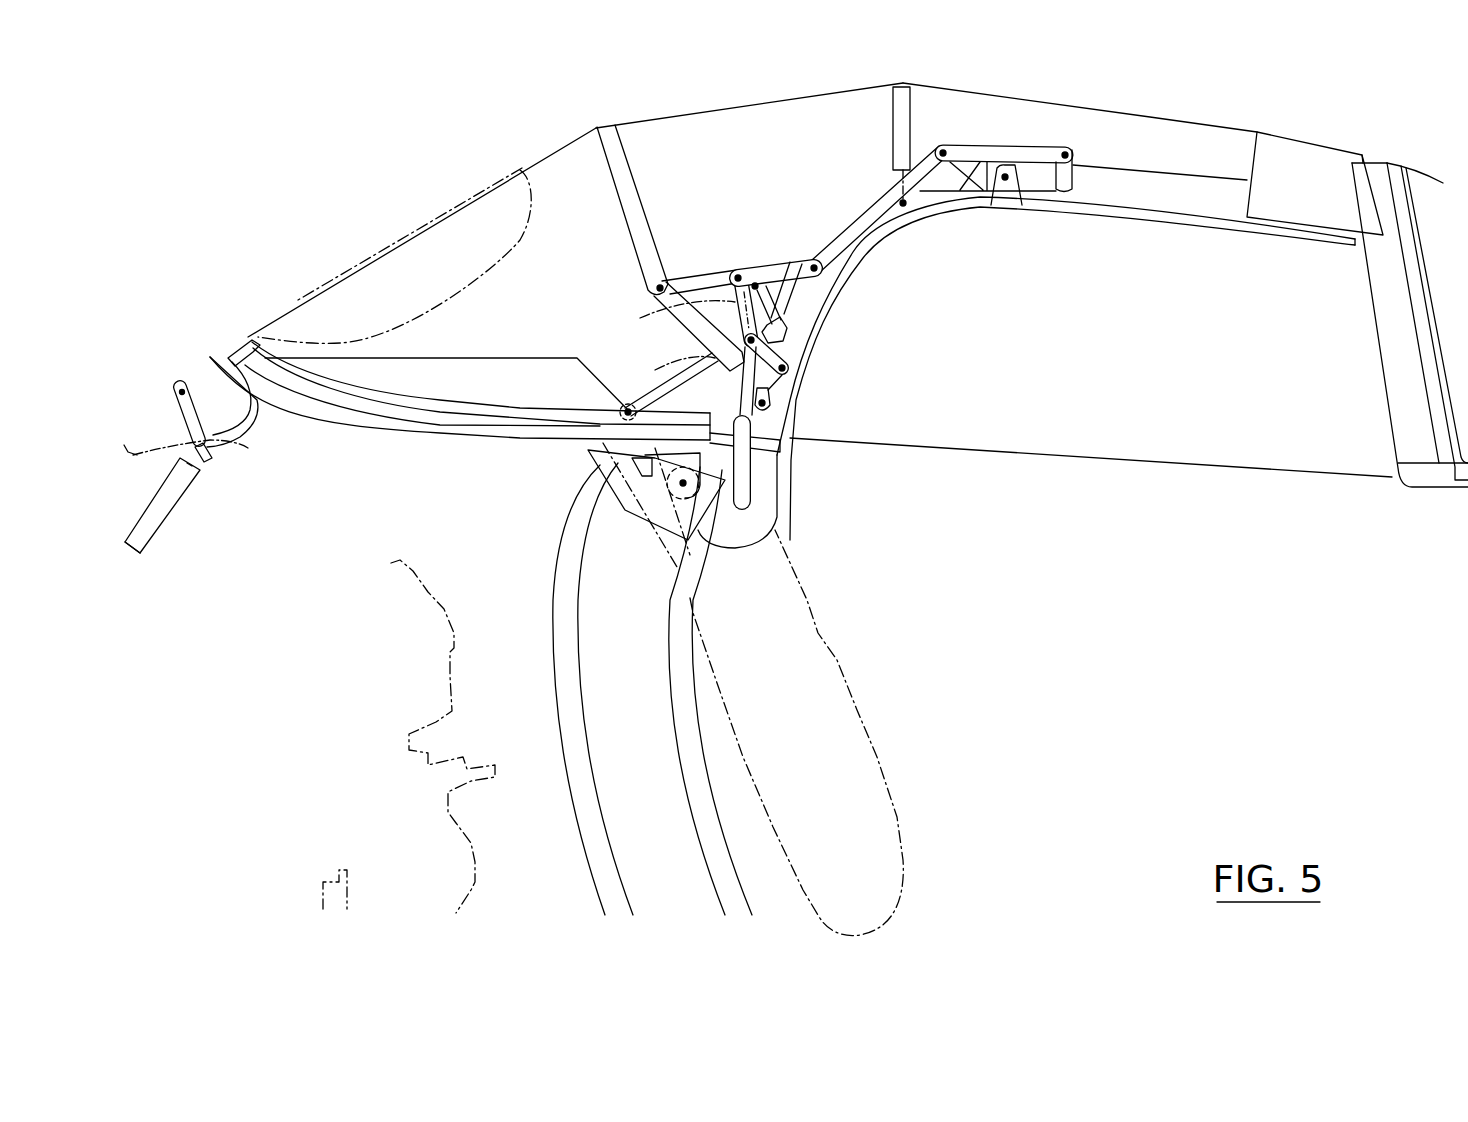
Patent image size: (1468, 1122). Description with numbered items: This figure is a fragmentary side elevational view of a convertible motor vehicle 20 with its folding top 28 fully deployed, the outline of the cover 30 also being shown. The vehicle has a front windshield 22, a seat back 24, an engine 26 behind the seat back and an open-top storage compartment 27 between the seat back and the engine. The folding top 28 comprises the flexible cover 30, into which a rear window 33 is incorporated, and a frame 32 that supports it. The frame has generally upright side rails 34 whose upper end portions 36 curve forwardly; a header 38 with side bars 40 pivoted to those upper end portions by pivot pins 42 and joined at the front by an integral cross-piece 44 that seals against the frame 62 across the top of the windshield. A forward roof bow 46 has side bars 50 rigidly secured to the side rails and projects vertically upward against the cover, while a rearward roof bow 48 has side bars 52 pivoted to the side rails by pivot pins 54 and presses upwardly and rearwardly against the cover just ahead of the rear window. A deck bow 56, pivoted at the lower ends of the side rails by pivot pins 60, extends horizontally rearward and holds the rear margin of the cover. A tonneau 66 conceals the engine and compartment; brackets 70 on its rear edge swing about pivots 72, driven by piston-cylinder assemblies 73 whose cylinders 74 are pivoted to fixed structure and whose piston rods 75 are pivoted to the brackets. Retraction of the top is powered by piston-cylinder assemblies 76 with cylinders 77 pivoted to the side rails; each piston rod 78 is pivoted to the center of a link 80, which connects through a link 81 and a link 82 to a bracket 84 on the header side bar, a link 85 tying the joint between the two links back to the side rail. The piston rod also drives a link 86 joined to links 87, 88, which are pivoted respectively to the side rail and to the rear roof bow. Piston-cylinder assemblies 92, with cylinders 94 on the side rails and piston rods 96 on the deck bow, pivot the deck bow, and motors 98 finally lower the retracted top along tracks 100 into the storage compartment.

The convertible motor vehicle 20 is at (1350, 132).
The front windshield 22 is at (1436, 185).
The seat back 24 is at (835, 638).
The engine 26 is at (432, 592).
The storage compartment 27 is at (528, 684).
The folding top 28 is at (663, 116).
The cover 30 is at (720, 110).
The frame 32 is at (580, 166).
The rear window 33 is at (360, 265).
The side rails 34 is at (816, 330).
The upper end portions 36 is at (973, 212).
The header 38 is at (1289, 128).
The side bars 40 is at (1167, 178).
The pivot pins 42 is at (1007, 176).
The cross-piece 44 is at (1315, 152).
The forward roof bow 46 is at (905, 107).
The rearward roof bow 48 is at (620, 170).
The side bars 50 is at (893, 118).
The side bars 52 is at (624, 204).
The pivot pins 54 is at (772, 396).
The deck bow 56 is at (237, 347).
The pivot pins 60 is at (645, 488).
The frame 62 is at (1364, 158).
The tonneau 66 is at (457, 368).
The brackets 70 is at (190, 422).
The pivots 72 is at (186, 384).
The piston-cylinder assemblies 73 is at (174, 500).
The cylinders 74 is at (145, 548).
The piston rods 75 is at (212, 456).
The piston-cylinder assemblies 76 is at (753, 478).
The cylinders 77 is at (783, 510).
The piston rod 78 is at (757, 416).
The link 80 is at (795, 353).
The link 81 is at (823, 232).
The link 82 is at (993, 149).
The bracket 84 is at (1073, 162).
The link 85 is at (915, 212).
The link 86 is at (690, 318).
The link 87 is at (793, 263).
The link 88 is at (688, 282).
The piston-cylinder assemblies 92 is at (678, 372).
The cylinders 94 is at (790, 323).
The piston rods 96 is at (662, 390).
The motors 98 is at (648, 522).
The tracks 100 is at (666, 672).